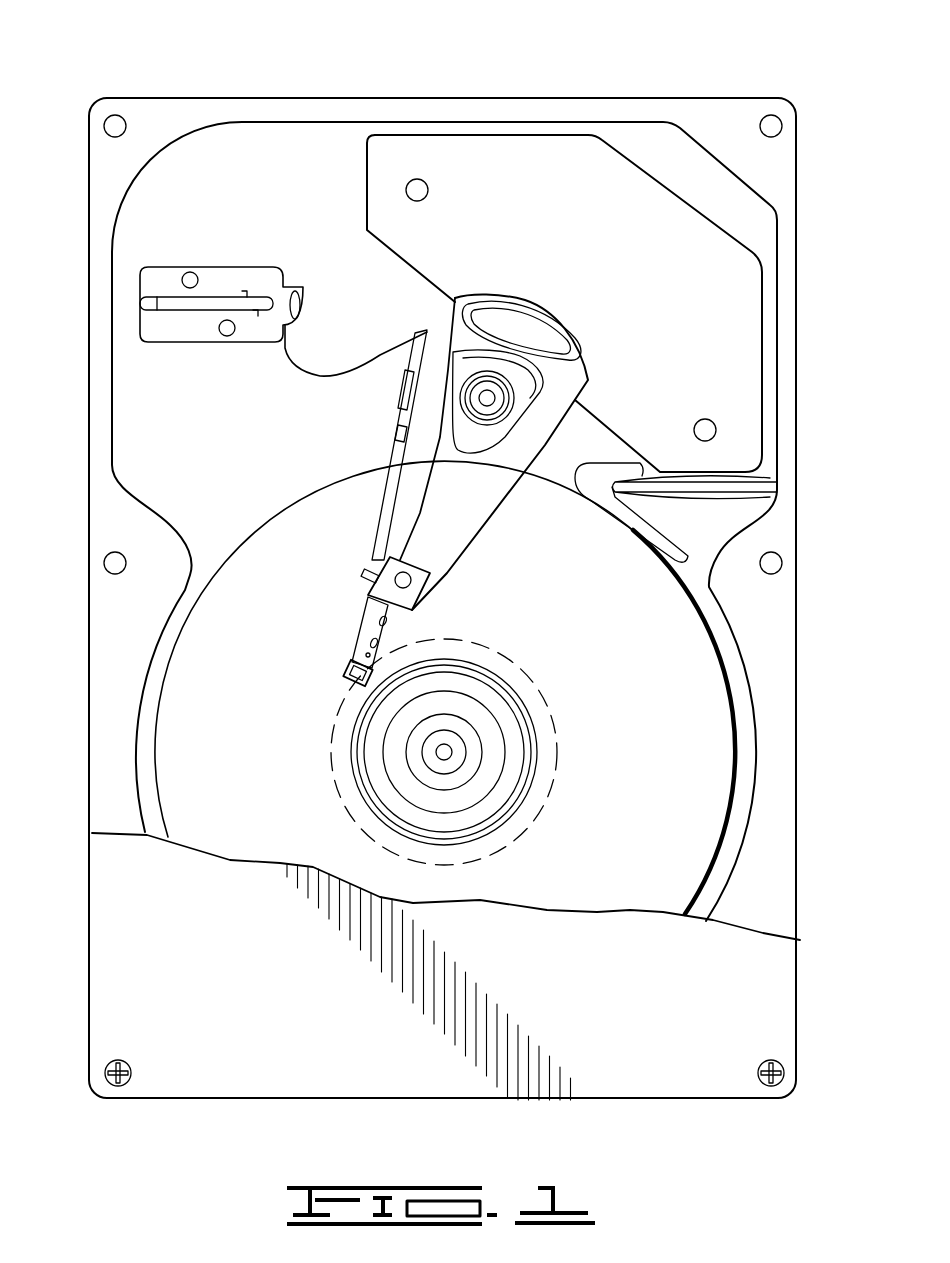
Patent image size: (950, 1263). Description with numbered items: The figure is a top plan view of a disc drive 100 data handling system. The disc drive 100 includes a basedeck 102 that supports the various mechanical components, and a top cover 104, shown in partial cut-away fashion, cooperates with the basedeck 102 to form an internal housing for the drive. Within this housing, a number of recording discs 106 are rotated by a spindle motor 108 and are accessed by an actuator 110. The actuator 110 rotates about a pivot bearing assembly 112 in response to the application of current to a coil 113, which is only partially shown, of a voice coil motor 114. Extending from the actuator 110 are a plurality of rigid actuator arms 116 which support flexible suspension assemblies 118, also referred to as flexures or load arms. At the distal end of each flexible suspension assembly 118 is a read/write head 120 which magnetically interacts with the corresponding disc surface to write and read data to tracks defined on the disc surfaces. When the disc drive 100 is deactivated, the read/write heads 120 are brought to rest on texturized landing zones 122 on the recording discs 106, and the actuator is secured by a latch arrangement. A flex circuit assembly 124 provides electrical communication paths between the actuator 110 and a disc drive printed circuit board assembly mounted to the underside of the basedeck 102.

The disc drive 100 is at (190, 57).
The basedeck 102 is at (248, 177).
The top cover 104 is at (142, 908).
The recording discs 106 is at (715, 766).
The spindle motor 108 is at (462, 746).
The actuator 110 is at (486, 518).
The pivot bearing assembly 112 is at (492, 402).
The coil 113 is at (527, 323).
The voice coil motor 114 is at (513, 177).
The rigid actuator arms 116 is at (438, 528).
The flexible suspension assemblies 118 is at (377, 632).
The read/write head 120 is at (362, 668).
The texturized landing zones 122 is at (525, 667).
The flex circuit assembly 124 is at (326, 358).